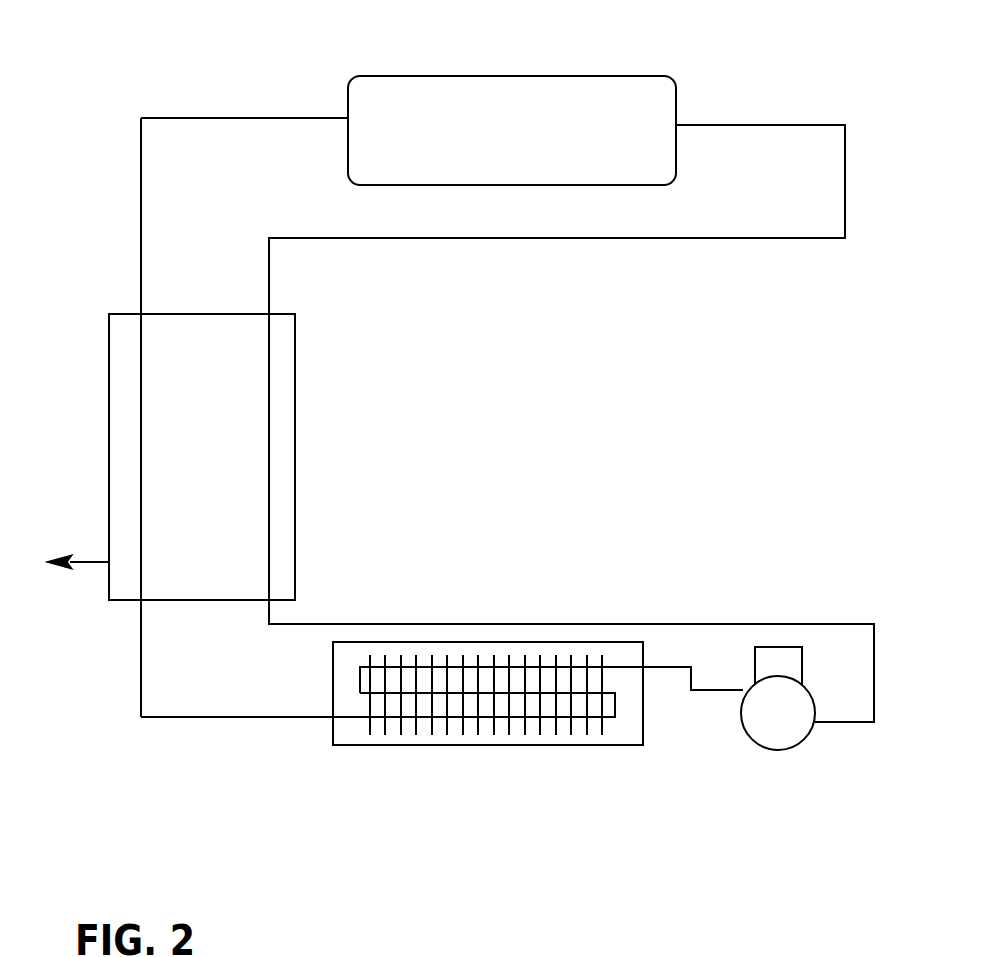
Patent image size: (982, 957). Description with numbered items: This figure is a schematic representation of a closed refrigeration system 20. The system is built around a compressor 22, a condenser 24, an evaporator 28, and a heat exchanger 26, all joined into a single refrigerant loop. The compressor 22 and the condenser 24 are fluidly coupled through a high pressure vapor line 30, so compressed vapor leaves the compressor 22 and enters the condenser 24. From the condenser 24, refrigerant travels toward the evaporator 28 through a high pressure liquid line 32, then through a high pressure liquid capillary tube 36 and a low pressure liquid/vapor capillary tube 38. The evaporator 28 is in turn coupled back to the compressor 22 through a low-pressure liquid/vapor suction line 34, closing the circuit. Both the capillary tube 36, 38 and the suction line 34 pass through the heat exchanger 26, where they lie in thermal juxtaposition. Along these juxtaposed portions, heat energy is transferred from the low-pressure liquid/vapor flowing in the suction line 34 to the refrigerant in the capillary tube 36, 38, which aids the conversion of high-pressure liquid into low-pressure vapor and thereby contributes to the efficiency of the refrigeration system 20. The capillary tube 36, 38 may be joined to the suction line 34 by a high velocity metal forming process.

The closed refrigeration system 20 is at (233, 85).
The compressor 22 is at (803, 742).
The condenser 24 is at (483, 746).
The heat exchanger 26 is at (109, 397).
The evaporator 28 is at (568, 100).
The high pressure vapor line 30 is at (702, 695).
The high pressure liquid line 32 is at (273, 718).
The low-pressure liquid/vapor suction line 34 is at (663, 239).
The high pressure liquid capillary tube 36 is at (140, 645).
The low pressure liquid/vapor capillary tube 38 is at (140, 242).